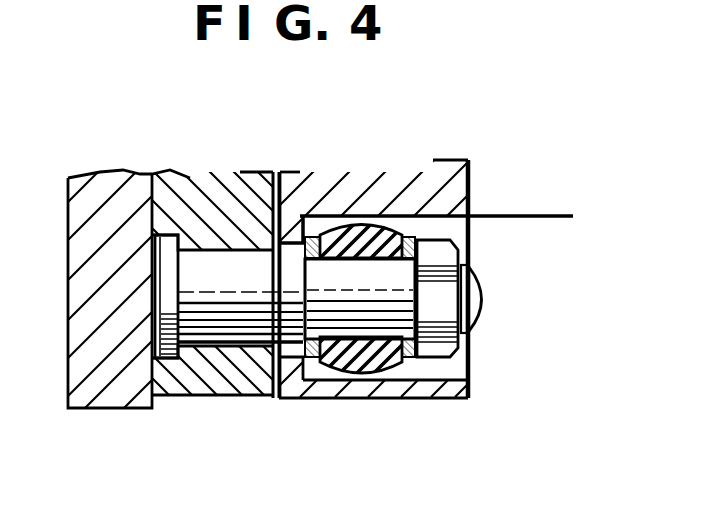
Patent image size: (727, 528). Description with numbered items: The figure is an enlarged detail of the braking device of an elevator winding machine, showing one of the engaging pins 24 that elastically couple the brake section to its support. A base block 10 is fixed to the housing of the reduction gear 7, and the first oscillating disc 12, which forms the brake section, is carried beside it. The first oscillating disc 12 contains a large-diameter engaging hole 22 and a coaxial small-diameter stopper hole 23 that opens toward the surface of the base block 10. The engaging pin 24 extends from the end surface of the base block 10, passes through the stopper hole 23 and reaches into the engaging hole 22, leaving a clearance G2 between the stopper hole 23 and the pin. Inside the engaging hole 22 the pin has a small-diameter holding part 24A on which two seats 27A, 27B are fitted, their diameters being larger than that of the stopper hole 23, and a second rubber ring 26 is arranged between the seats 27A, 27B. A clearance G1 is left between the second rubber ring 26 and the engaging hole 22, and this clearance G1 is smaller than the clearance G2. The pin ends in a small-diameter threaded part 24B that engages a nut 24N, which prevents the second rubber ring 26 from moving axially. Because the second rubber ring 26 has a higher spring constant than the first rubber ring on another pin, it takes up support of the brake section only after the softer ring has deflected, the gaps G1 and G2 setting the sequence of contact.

The reduction gear 7 is at (101, 410).
The base block 10 is at (180, 397).
The first oscillating disc 12 is at (322, 375).
The engaging hole 22 is at (470, 372).
The stopper hole 23 is at (285, 362).
The engaging pin 24 is at (228, 345).
The small-diameter holding part 24A is at (360, 262).
The small-diameter threaded part 24B is at (486, 322).
The nut 24N is at (470, 252).
The second rubber ring 26 is at (368, 340).
The seat 27A is at (311, 233).
The seat 27B is at (409, 358).
The clearance G1 is at (553, 186).
The clearance G2 is at (235, 222).